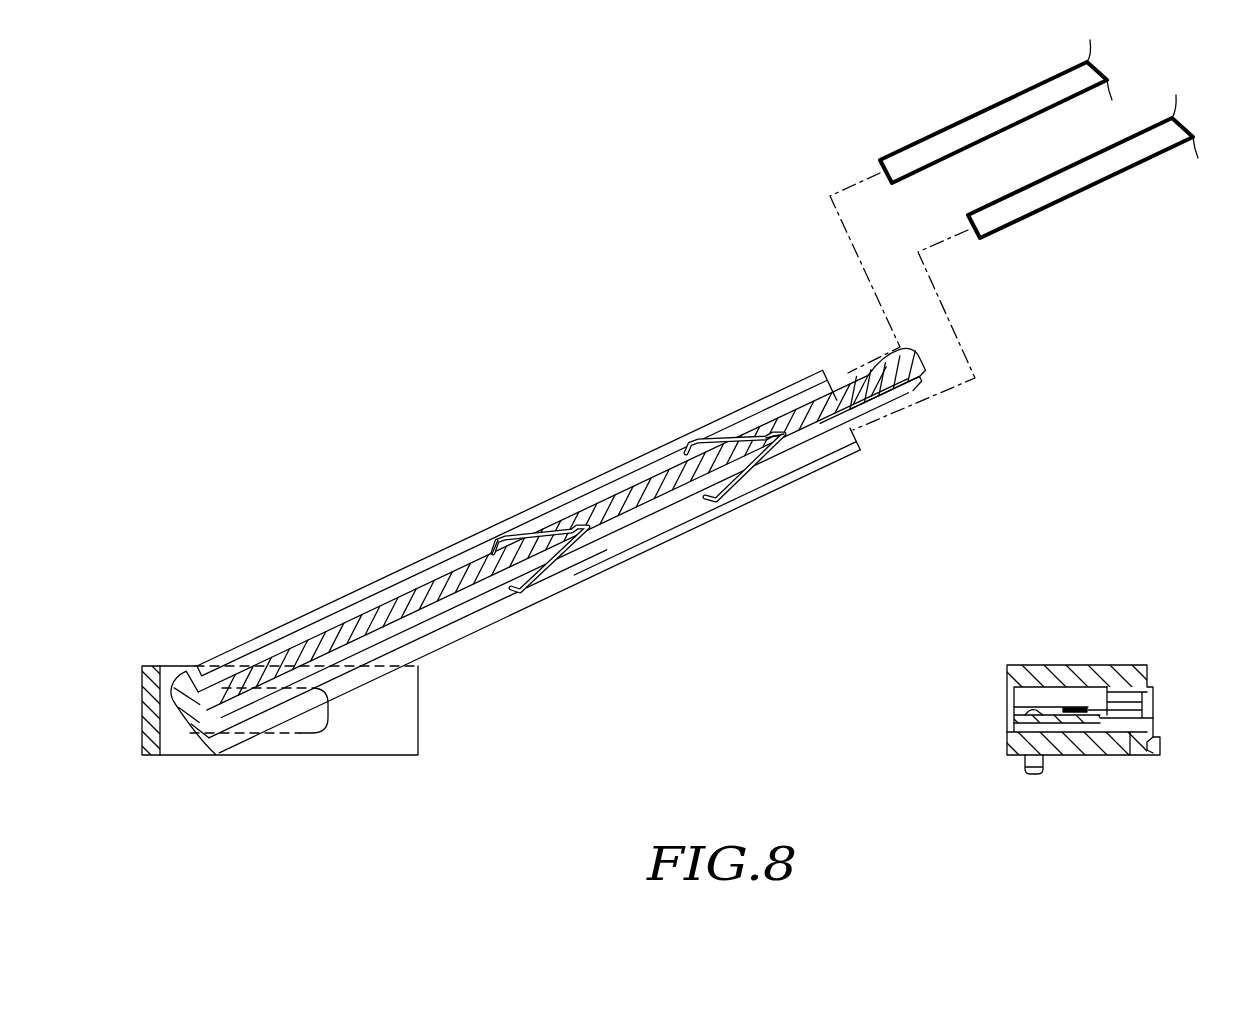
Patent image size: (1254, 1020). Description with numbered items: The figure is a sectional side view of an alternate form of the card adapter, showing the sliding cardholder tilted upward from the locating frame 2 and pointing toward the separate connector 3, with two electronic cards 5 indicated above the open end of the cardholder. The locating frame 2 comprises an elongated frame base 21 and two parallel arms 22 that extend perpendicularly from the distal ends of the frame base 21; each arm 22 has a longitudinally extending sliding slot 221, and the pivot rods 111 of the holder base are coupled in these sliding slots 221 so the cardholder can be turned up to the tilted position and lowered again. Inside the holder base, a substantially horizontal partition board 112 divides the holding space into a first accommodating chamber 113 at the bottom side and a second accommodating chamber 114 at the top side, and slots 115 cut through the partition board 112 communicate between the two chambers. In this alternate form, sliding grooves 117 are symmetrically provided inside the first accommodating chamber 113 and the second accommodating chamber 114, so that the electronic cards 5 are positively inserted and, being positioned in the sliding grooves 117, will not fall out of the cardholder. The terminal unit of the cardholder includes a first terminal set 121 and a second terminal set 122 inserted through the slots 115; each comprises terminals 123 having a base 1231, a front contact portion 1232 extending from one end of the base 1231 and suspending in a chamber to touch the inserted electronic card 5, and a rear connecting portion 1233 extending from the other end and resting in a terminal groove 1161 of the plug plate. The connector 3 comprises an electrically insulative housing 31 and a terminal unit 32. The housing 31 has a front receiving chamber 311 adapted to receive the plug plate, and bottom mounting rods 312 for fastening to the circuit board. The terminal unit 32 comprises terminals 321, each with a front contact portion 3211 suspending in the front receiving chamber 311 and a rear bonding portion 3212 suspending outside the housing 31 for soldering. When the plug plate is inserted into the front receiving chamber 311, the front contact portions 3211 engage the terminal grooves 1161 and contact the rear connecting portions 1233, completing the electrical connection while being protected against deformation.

The locating frame 2 is at (163, 645).
The elongated frame base 21 is at (142, 698).
The arms 22 is at (383, 742).
The sliding slot 221 is at (300, 730).
The pivot rods 111 is at (183, 742).
The partition board 112 is at (358, 638).
The first accommodating chamber 113 is at (434, 632).
The second accommodating chamber 114 is at (275, 646).
The slots 115 is at (495, 580).
The sliding grooves 117 is at (608, 490).
The first terminal set 121 is at (580, 580).
The second terminal set 122 is at (500, 527).
The terminals 123 is at (685, 463).
The base 1231 is at (776, 436).
The front contact portion 1232 is at (537, 530).
The rear connecting portion 1233 is at (874, 366).
The terminal grooves 1161 is at (908, 398).
The electronic cards 5 is at (1075, 188).
The connector 3 is at (1188, 640).
The electrically insulative housing 31 is at (1095, 672).
The terminal unit 32 is at (1162, 710).
The front receiving chamber 311 is at (1010, 708).
The bottom mounting rods 312 is at (1038, 775).
The terminals 321 is at (1085, 724).
The front contact portion 3211 is at (1035, 705).
The rear bonding portion 3212 is at (1150, 746).